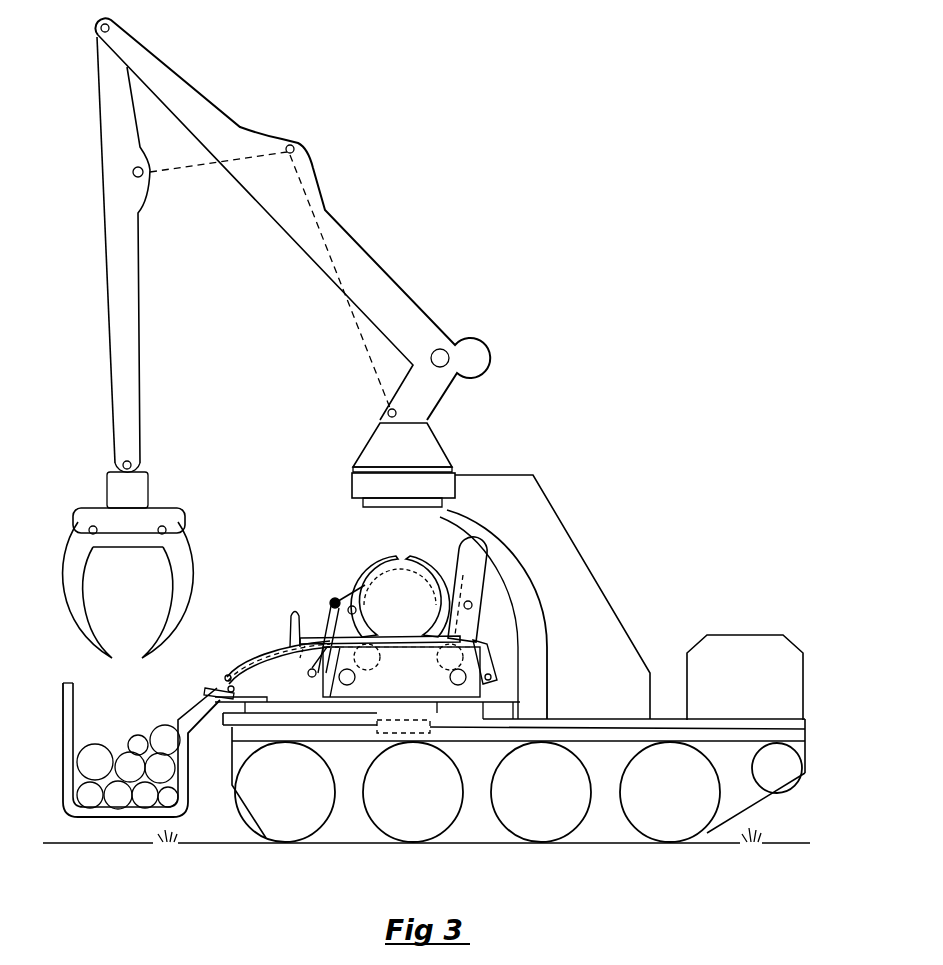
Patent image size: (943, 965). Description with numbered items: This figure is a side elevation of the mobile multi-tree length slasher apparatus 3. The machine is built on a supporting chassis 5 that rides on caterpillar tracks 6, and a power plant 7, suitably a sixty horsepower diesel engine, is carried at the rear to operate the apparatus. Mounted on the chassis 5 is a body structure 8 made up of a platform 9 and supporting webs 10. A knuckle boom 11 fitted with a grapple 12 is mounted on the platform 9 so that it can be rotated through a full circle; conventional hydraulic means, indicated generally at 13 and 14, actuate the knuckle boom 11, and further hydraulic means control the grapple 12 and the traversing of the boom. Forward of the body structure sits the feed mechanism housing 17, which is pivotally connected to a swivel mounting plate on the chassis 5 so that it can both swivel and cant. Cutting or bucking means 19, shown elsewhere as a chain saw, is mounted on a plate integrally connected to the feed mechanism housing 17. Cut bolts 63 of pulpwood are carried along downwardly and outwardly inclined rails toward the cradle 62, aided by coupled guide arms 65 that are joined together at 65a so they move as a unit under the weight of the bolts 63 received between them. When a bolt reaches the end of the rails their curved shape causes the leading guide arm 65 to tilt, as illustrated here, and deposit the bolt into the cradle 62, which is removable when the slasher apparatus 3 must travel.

The mobile multi-tree length slasher apparatus 3 is at (627, 591).
The supporting chassis 5 is at (804, 733).
The caterpillar tracks 6 is at (753, 806).
The power plant 7 is at (783, 631).
The body structure 8 is at (570, 540).
The platform 9 is at (518, 476).
The supporting webs 10 is at (452, 507).
The knuckle boom 11 is at (193, 90).
The grapple 12 is at (180, 545).
The hydraulic means 13 is at (198, 170).
The hydraulic means 14 is at (360, 333).
The feed mechanism housing 17 is at (308, 683).
The cutting or bucking means 19 is at (482, 585).
The cradle 62 is at (73, 696).
The cut bolts 63 is at (117, 793).
The guide arms 65 is at (290, 631).
The coupling of guide arms 65a is at (300, 658).